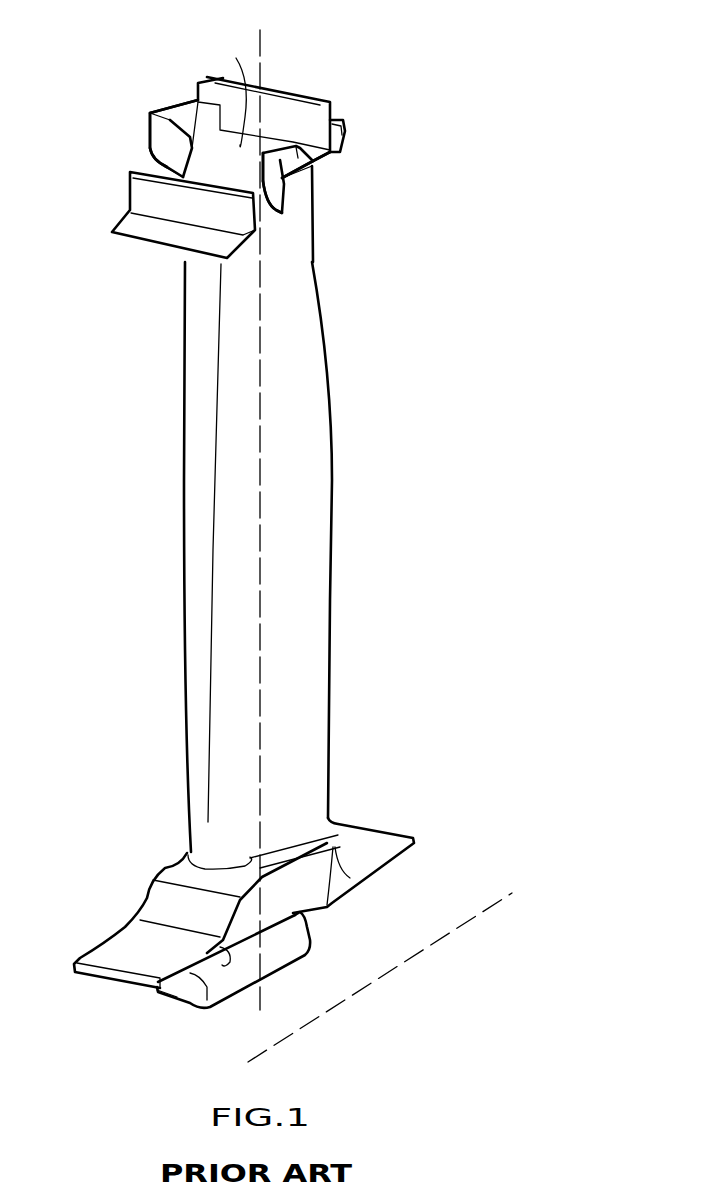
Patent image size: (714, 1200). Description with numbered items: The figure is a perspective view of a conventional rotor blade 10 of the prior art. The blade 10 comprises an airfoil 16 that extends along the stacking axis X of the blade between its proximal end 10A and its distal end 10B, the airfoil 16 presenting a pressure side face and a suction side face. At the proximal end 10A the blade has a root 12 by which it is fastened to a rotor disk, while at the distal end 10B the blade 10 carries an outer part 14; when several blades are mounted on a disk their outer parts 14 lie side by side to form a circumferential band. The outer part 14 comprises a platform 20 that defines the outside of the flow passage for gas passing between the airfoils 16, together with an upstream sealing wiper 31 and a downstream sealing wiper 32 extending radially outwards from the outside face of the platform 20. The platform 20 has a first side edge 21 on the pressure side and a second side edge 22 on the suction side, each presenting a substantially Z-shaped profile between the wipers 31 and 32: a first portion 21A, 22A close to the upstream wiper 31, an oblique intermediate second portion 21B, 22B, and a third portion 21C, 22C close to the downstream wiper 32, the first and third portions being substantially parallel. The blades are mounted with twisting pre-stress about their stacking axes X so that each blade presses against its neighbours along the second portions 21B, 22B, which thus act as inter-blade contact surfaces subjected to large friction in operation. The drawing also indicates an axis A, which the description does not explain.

The blade 10 is at (168, 496).
The proximal end 10A is at (362, 818).
The distal end 10B is at (311, 93).
The root 12 is at (177, 993).
The outer part 14 is at (183, 68).
The airfoil 16 is at (307, 447).
The platform 20 is at (235, 91).
The first side edge 21 is at (407, 128).
The first portion of the first side edge 21A is at (277, 220).
The second portion of the first side edge 21B is at (283, 184).
The third portion of the first side edge 21C is at (333, 163).
The second side edge 22 is at (134, 68).
The first portion of the second side edge 22A is at (173, 167).
The second portion of the second side edge 22B is at (158, 138).
The third portion of the second side edge 22C is at (179, 107).
The upstream sealing wiper 31 is at (145, 193).
The downstream sealing wiper 32 is at (328, 111).
The stacking axis X is at (262, 38).
The engine axis A is at (480, 913).